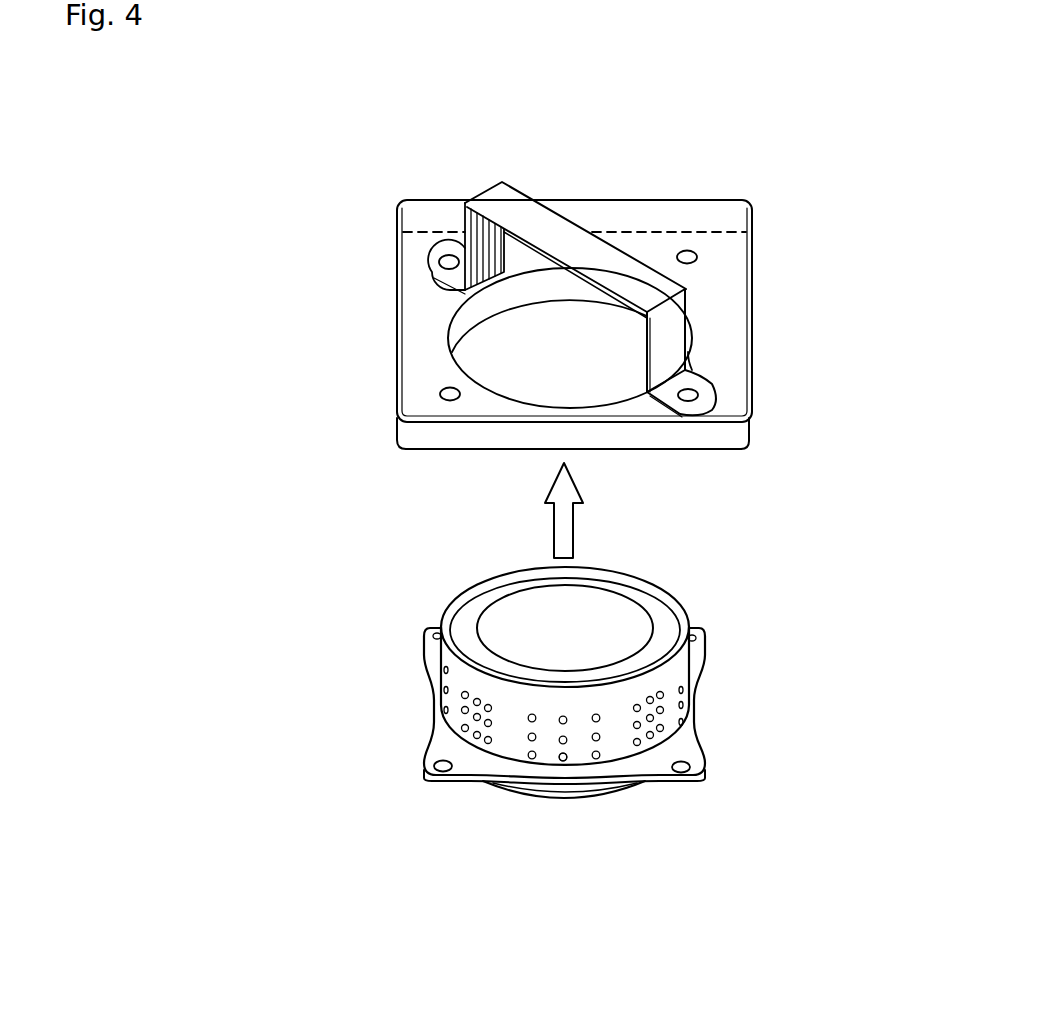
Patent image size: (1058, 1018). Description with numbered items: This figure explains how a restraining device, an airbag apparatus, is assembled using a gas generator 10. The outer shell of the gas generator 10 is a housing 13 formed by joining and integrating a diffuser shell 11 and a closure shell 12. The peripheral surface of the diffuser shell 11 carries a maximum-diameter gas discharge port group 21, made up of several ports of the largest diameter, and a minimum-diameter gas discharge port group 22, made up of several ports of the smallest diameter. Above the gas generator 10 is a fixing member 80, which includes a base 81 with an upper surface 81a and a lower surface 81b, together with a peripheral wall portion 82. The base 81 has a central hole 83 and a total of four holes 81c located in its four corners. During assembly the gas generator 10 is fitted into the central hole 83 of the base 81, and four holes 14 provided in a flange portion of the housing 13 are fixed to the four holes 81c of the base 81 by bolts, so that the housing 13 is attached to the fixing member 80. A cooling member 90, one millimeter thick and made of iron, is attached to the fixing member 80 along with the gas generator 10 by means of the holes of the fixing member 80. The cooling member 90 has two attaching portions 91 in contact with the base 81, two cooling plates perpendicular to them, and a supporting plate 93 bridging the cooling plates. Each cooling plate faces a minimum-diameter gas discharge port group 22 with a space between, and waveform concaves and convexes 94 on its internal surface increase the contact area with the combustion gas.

The gas generator 10 is at (532, 693).
The diffuser shell 11 is at (450, 697).
The closure shell 12 is at (482, 784).
The housing 13 is at (472, 725).
The holes 14 is at (696, 758).
The maximum-diameter gas discharge port group 21 is at (576, 758).
The minimum-diameter gas discharge port group 22 is at (675, 736).
The fixing member 80 is at (609, 311).
The base 81 is at (615, 302).
The upper surface 81a is at (733, 405).
The lower surface 81b is at (727, 452).
The holes 81c is at (446, 391).
The peripheral wall portion 82 is at (440, 435).
The central hole 83 is at (582, 352).
The cooling member 90 is at (566, 252).
The attaching portions 91 is at (710, 388).
The supporting plate 93 is at (593, 238).
The waveform concaves and convexes 94 is at (446, 282).